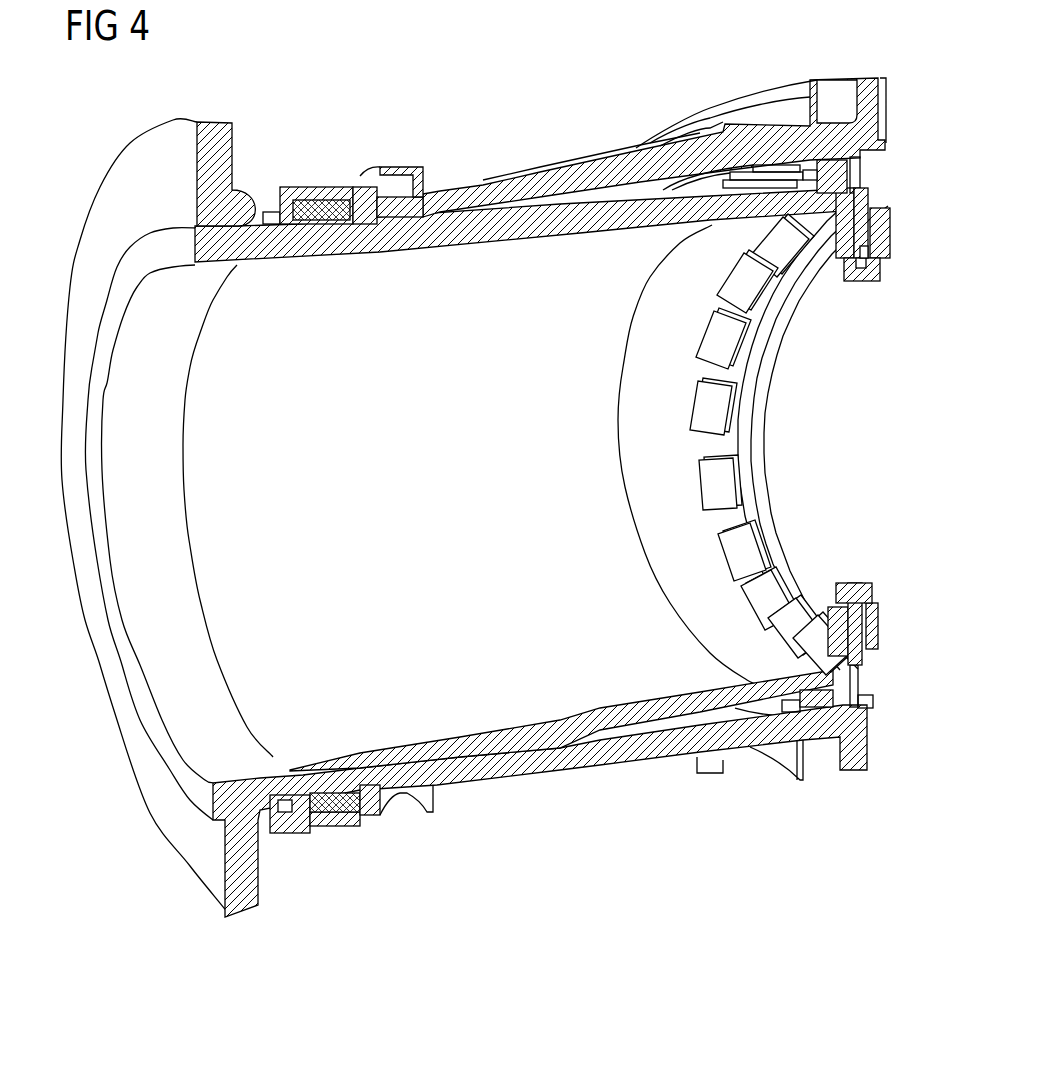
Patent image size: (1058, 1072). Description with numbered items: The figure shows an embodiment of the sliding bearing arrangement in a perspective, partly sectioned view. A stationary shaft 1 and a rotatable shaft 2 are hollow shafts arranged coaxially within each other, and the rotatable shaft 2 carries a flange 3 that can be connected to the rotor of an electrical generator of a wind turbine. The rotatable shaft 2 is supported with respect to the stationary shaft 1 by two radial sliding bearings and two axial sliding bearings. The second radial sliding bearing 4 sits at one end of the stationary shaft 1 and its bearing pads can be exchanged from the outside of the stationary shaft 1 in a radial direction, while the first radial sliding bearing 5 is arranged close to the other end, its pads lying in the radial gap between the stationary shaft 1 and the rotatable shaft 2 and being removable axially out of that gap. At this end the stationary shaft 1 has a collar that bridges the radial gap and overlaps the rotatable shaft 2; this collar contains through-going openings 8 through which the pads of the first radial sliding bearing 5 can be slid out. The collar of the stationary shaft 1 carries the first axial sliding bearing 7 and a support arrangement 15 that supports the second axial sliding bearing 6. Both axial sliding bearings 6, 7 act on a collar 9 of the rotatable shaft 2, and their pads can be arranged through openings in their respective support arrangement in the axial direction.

The stationary shaft 1 is at (867, 104).
The rotatable shaft 2 is at (253, 243).
The flange 3 is at (229, 152).
The second radial sliding bearing 4 is at (322, 197).
The first radial sliding bearing 5 is at (835, 170).
The second axial sliding bearing 6 is at (828, 236).
The first axial sliding bearing 7 is at (892, 240).
The openings 8 is at (880, 173).
The collar 9 is at (866, 255).
The support arrangement 15 is at (866, 284).